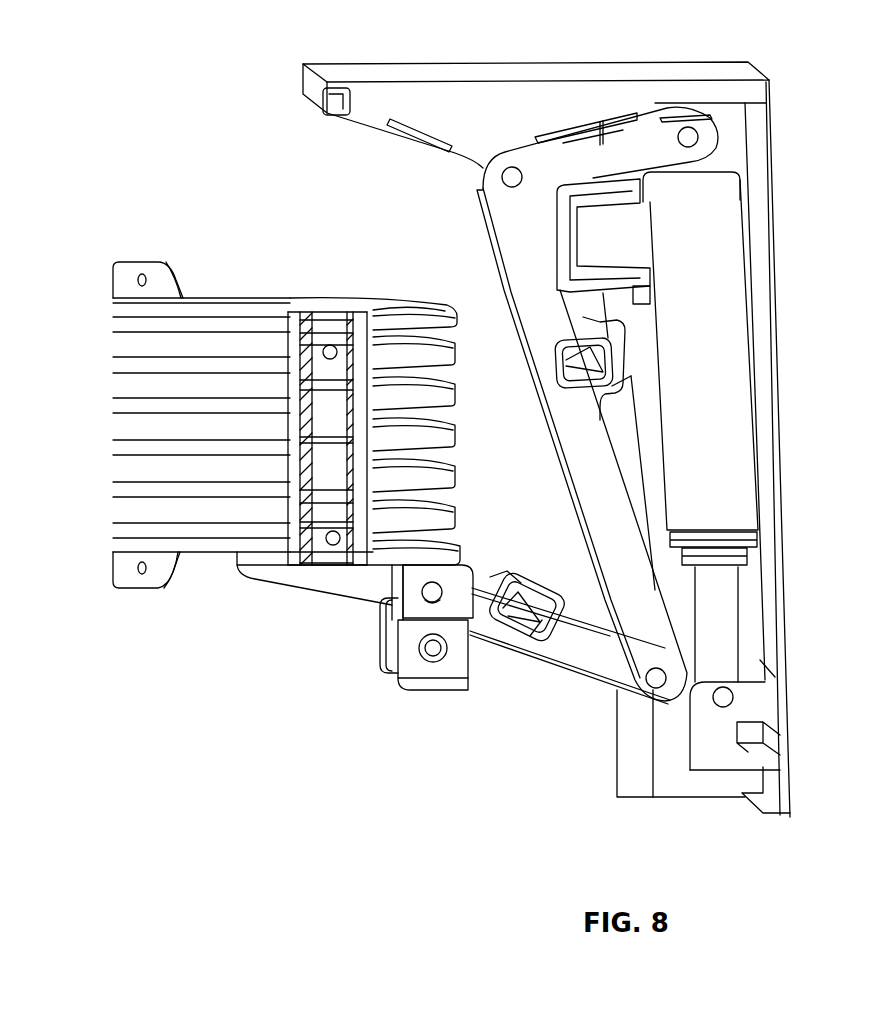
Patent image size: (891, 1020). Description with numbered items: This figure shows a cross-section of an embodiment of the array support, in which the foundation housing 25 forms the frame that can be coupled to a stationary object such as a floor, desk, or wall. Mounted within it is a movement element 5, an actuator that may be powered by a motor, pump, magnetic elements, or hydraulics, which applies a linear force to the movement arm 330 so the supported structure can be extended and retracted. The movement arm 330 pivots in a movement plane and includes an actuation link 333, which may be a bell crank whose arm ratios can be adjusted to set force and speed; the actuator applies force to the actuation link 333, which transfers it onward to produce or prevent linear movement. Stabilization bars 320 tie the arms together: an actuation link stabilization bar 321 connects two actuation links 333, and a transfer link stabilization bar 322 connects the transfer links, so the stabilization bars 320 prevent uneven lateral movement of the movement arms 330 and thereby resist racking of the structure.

The foundation housing 25 is at (684, 66).
The actuation link 333 is at (603, 158).
The movement element 5 is at (707, 283).
The actuation link stabilization bar 321 is at (572, 352).
The stabilization bar 320 is at (612, 367).
The transfer link stabilization bar 322 is at (527, 640).
The movement arm 330 is at (567, 655).